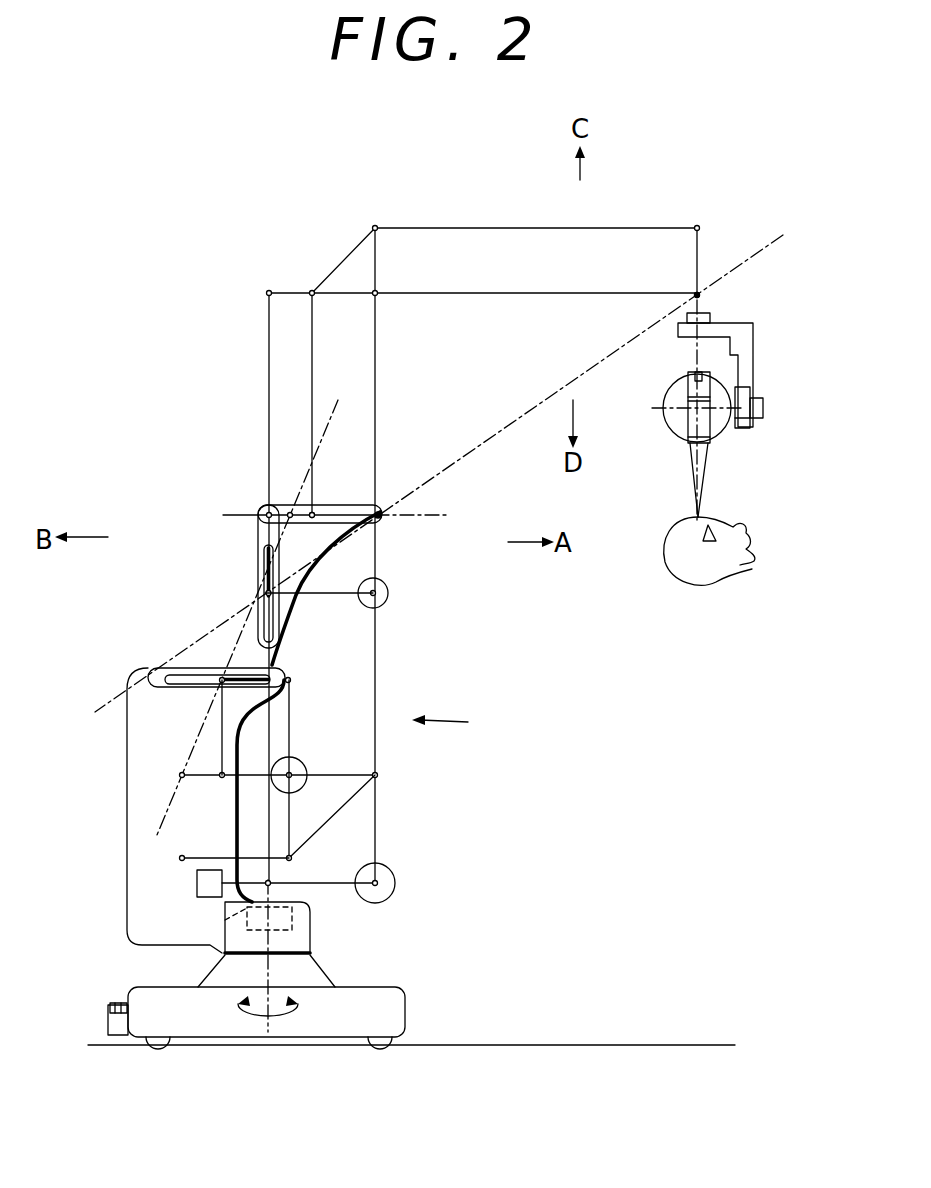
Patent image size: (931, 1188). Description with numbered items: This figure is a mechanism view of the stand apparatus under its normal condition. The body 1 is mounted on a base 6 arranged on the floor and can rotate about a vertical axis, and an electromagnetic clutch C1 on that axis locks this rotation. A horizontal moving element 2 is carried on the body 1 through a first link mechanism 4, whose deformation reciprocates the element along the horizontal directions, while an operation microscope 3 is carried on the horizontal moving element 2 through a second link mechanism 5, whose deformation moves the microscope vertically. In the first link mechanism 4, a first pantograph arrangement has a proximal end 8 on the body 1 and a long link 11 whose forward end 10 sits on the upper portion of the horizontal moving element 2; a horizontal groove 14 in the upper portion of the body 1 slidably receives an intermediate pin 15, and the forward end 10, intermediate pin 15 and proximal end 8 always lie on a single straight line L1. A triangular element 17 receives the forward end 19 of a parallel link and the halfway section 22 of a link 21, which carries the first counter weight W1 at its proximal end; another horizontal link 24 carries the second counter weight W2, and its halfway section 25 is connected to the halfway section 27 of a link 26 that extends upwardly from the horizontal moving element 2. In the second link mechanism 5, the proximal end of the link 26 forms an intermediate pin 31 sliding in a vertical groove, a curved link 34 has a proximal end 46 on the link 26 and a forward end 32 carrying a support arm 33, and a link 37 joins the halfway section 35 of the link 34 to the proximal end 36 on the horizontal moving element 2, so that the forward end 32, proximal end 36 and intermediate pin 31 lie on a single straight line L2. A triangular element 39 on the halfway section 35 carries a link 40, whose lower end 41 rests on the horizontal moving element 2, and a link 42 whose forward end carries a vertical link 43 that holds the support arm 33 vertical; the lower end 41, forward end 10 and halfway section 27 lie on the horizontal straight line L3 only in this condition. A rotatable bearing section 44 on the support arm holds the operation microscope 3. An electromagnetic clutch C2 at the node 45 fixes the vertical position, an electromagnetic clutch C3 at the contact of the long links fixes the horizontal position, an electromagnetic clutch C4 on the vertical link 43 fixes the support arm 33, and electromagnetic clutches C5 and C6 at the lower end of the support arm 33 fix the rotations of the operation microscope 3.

The body 1 is at (127, 833).
The horizontal moving element 2 is at (310, 540).
The operation microscope 3 is at (683, 423).
The first link mechanism 4 is at (448, 728).
The second link mechanism 5 is at (204, 404).
The base 6 is at (400, 1005).
The proximal end 8 is at (182, 775).
The forward end 10 is at (285, 507).
The long link 11 is at (293, 653).
The horizontal groove 14 is at (157, 668).
The intermediate pin 15 is at (208, 667).
The triangular element 17 is at (182, 858).
The forward end 19 is at (293, 857).
The link 21 is at (378, 547).
The halfway section 22 is at (375, 775).
The link 24 is at (335, 892).
The halfway section 25 is at (268, 882).
The link 26 is at (269, 347).
The halfway section 27 is at (263, 506).
The intermediate pin 31 is at (262, 578).
The forward end 32 is at (712, 293).
The support arm 33 is at (753, 362).
The link 34 is at (527, 297).
The halfway section 35 is at (377, 292).
The proximal end 36 is at (380, 505).
The link 37 is at (376, 347).
The triangular element 39 is at (341, 271).
The link 40 is at (312, 347).
The lower end 41 is at (312, 507).
The link 42 is at (496, 227).
The vertical link 43 is at (697, 262).
The rotatable bearing section 44 is at (666, 397).
The node 45 is at (388, 580).
The proximal end 46 is at (268, 291).
The straight line L1 is at (338, 413).
The straight line L2 is at (750, 238).
The straight line L3 is at (443, 520).
The electromagnetic clutch C1 is at (242, 928).
The electromagnetic clutch C2 is at (386, 608).
The electromagnetic clutch C3 is at (300, 757).
The electromagnetic clutch C4 is at (712, 315).
The electromagnetic clutch C5 is at (763, 398).
The electromagnetic clutch C6 is at (748, 430).
The first counter weight W1 is at (392, 895).
The second counter weight W2 is at (197, 890).